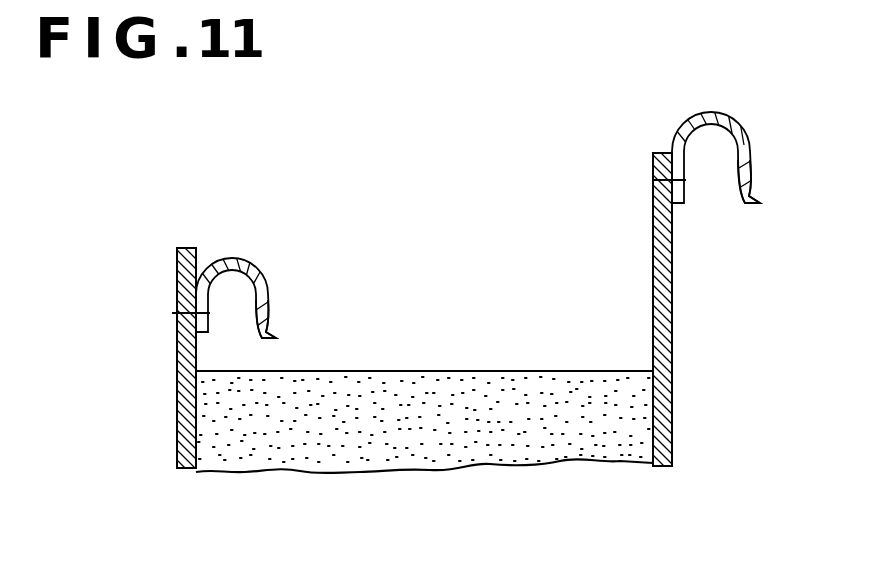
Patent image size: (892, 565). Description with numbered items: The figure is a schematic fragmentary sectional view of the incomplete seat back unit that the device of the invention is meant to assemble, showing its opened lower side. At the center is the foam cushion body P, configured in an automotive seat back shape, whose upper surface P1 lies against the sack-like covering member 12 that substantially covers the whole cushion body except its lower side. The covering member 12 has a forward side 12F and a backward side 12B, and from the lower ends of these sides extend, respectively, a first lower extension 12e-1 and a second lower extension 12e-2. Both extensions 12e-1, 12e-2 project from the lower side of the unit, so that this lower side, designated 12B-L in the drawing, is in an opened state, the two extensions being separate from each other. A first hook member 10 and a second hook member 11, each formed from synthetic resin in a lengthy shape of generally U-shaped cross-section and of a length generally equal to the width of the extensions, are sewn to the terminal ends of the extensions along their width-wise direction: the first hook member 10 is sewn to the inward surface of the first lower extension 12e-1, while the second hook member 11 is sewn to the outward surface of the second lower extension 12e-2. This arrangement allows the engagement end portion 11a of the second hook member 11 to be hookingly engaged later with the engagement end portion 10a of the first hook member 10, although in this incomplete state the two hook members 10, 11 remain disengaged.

The first hook member 10 is at (240, 258).
The engagement end portion of first hook member 10a is at (268, 308).
The second hook member 11 is at (705, 112).
The engagement end portion of second hook member 11a is at (752, 165).
The covering member 12 is at (178, 458).
The backward side of covering member 12B is at (165, 432).
The left portion of rear wall region 12B-L is at (430, 181).
The first lower extension 12e-1 is at (176, 275).
The second lower extension 12e-2 is at (672, 252).
The forward side of covering member 12F is at (688, 439).
The foam cushion body P is at (490, 452).
The upper surface of plate P1 is at (449, 370).